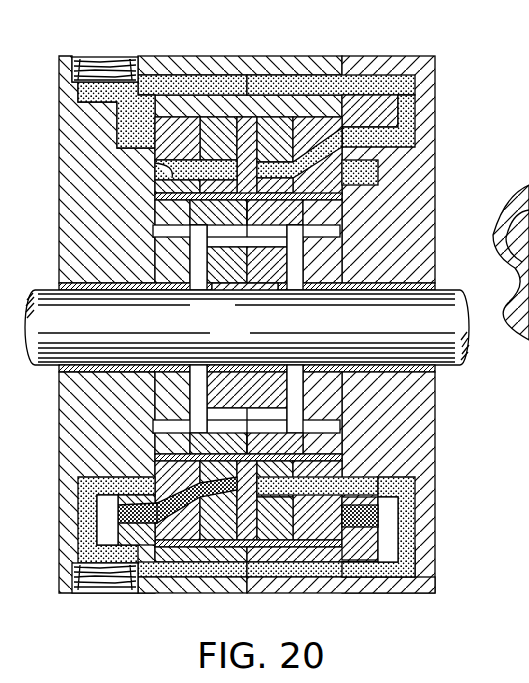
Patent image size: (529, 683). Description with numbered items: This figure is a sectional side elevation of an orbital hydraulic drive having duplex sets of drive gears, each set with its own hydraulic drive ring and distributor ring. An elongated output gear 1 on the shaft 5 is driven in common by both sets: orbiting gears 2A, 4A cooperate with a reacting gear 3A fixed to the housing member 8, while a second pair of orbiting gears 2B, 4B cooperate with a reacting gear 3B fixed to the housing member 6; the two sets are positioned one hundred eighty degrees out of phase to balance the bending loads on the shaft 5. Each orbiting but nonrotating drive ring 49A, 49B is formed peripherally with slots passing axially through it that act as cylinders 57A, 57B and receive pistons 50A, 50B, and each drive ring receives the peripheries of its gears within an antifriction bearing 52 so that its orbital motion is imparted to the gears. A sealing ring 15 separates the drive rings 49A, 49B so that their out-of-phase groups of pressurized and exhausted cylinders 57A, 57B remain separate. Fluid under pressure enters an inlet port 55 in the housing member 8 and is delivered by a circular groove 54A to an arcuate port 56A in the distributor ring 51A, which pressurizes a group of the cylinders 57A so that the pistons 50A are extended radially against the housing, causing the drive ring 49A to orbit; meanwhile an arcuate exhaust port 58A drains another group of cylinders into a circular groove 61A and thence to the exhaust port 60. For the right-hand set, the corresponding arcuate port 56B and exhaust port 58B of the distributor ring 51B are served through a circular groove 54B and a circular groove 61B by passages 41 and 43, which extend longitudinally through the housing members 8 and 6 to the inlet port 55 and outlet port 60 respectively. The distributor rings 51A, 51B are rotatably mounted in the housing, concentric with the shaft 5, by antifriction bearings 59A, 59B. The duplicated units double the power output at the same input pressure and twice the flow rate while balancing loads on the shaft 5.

The output gear 1 is at (268, 303).
The orbiting gear 2A is at (205, 205).
The orbiting gear 2B is at (360, 196).
The reacting gear 3A is at (175, 230).
The reacting gear 3B is at (322, 243).
The orbiting gear 4A is at (207, 213).
The orbiting gear 4B is at (318, 240).
The shaft 5 is at (470, 347).
The housing member 6 is at (435, 110).
The housing member 8 is at (59, 183).
The sealing ring 15 is at (252, 138).
The passage 41 is at (213, 137).
The passage 43 is at (262, 568).
The drive ring 49A is at (225, 465).
The drive ring 49B is at (243, 497).
The pistons 50A is at (216, 75).
The pistons 50B is at (278, 145).
The distributor ring 51A is at (173, 133).
The distributor ring 51B is at (342, 82).
The antifriction bearing 52 is at (338, 460).
The circular groove 54A is at (157, 516).
The circular groove 54B is at (375, 517).
The inlet port 55 is at (88, 57).
The arcuate port 56A is at (165, 492).
The arcuate port 56B is at (360, 165).
The cylinders 57A is at (150, 427).
The cylinders 57B is at (278, 568).
The arcuate exhaust port 58A is at (165, 178).
The arcuate exhaust port 58B is at (335, 484).
The antifriction bearing 59A is at (140, 531).
The antifriction bearing 59B is at (380, 537).
The exhaust port 60 is at (88, 593).
The circular groove 61A is at (78, 481).
The circular groove 61B is at (416, 487).